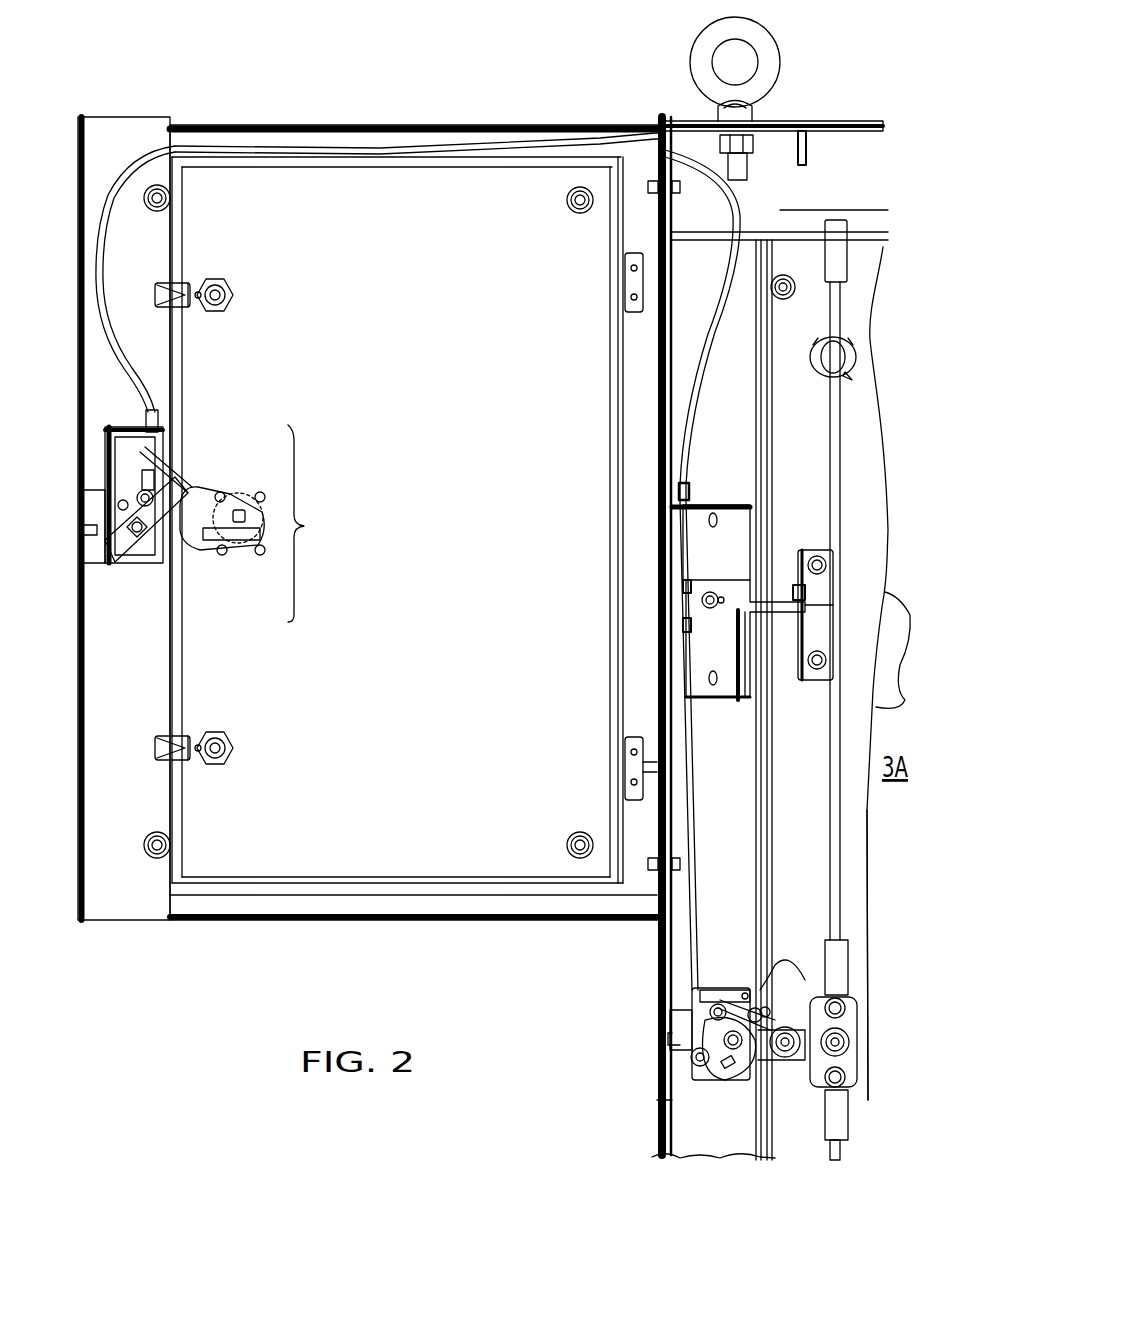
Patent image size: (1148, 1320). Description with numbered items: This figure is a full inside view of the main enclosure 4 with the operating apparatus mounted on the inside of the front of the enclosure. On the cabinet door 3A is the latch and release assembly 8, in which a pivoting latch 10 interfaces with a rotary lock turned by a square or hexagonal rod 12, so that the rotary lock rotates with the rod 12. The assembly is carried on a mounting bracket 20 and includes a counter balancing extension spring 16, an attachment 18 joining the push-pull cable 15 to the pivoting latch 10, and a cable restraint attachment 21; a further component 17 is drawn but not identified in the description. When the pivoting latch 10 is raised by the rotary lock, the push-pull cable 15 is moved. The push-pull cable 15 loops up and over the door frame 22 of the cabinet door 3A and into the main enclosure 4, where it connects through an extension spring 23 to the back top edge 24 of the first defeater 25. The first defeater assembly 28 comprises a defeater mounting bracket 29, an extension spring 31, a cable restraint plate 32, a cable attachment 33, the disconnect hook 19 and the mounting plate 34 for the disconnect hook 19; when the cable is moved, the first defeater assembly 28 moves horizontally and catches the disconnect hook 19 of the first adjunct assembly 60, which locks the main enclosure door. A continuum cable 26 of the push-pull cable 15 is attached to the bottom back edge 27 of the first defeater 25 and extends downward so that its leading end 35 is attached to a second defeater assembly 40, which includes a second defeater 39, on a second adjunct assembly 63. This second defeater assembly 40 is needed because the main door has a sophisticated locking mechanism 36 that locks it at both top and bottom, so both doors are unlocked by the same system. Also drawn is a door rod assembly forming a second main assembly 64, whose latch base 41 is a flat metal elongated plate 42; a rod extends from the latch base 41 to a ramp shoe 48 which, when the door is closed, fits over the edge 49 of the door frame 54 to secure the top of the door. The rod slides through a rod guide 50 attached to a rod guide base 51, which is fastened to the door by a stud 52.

The cabinet door 3A is at (412, 522).
The main enclosure 4 is at (815, 700).
The latch and release assembly 8 is at (305, 526).
The pivoting latch 10 is at (122, 548).
The rod 12 is at (250, 522).
The push-pull cable 15 is at (125, 160).
The counter balancing extension spring 16 is at (108, 455).
The door post 17 is at (124, 518).
The attachment 18 is at (163, 500).
The disconnect hook 19 is at (822, 555).
The mounting bracket 20 is at (148, 556).
The cable restraint attachment 21 is at (116, 408).
The door frame 22 is at (385, 150).
The extension spring 23 is at (680, 628).
The back top edge 24 is at (698, 556).
The first defeater 25 is at (717, 615).
The continuum cable 26 is at (688, 832).
The bottom back edge 27 is at (698, 630).
The first defeater assembly 28 is at (892, 682).
The defeater mounting bracket 29 is at (738, 601).
The extension spring 31 is at (740, 652).
The cable restraint plate 32 is at (698, 500).
The cable attachment 33 is at (678, 494).
The mounting plate 34 is at (823, 606).
The leading end 35 is at (700, 985).
The locking mechanism 36 is at (868, 842).
The second defeater 39 is at (717, 1060).
The second defeater assembly 40 is at (800, 992).
The latch base 41 is at (682, 1025).
The flat metal elongated plate 42 is at (690, 1072).
The ramp shoe 48 is at (850, 268).
The edge 49 is at (855, 222).
The rod guide 50 is at (858, 352).
The rod guide base 51 is at (855, 365).
The stud 52 is at (847, 390).
The door frame 54 is at (890, 235).
The first adjunct assembly 60 is at (805, 545).
The second adjunct assembly 63 is at (862, 1030).
The second main assembly 64 is at (652, 1077).